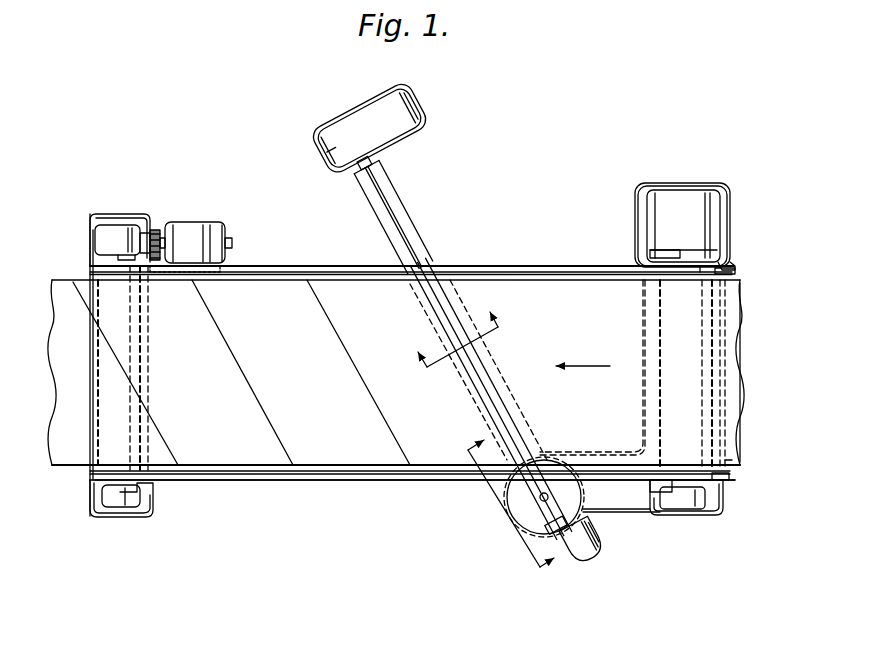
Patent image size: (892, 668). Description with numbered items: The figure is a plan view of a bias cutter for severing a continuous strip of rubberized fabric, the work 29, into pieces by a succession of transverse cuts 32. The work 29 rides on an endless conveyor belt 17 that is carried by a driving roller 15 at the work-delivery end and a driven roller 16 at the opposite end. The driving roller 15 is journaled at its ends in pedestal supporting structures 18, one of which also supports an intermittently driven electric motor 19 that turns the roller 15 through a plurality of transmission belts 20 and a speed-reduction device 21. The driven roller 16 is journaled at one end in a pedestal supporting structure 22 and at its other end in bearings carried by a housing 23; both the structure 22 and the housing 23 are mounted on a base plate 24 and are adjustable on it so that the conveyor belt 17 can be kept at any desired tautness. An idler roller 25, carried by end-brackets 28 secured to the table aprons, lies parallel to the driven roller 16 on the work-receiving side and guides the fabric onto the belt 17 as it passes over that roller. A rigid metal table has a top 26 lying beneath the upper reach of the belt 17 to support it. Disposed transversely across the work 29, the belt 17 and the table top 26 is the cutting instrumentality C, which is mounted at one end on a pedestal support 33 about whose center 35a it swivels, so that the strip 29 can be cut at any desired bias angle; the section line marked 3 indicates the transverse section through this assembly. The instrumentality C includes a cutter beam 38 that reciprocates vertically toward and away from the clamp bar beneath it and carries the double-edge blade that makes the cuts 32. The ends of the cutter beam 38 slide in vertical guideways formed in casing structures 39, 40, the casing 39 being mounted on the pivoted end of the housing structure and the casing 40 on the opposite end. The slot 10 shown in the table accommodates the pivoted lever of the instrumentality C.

The slot in table 10 is at (482, 439).
The driving roller 15 is at (92, 273).
The driven roller 16 is at (721, 265).
The endless conveyor belt 17 is at (312, 468).
The pedestal supporting structure 18 is at (92, 222).
The electric motor 19 is at (200, 228).
The transmission belts 20 is at (157, 232).
The speed-reduction device 21 is at (128, 231).
The pedestal supporting structure 22 is at (706, 500).
The housing 23 is at (706, 218).
The base plate 24 is at (622, 508).
The idler roller 25 is at (728, 462).
The table top 26 is at (386, 480).
The end-brackets 28 is at (731, 272).
The work 29 is at (735, 378).
The transverse cuts 32 is at (163, 452).
The pedestal support 33 is at (530, 522).
The pivot pin clip 35a is at (502, 574).
The cutter beam 38 is at (382, 219).
The casing structure 39 is at (565, 564).
The casing structure 40 is at (355, 152).
The section line 3- 3 is at (467, 356).
The cutting instrumentality C is at (505, 364).